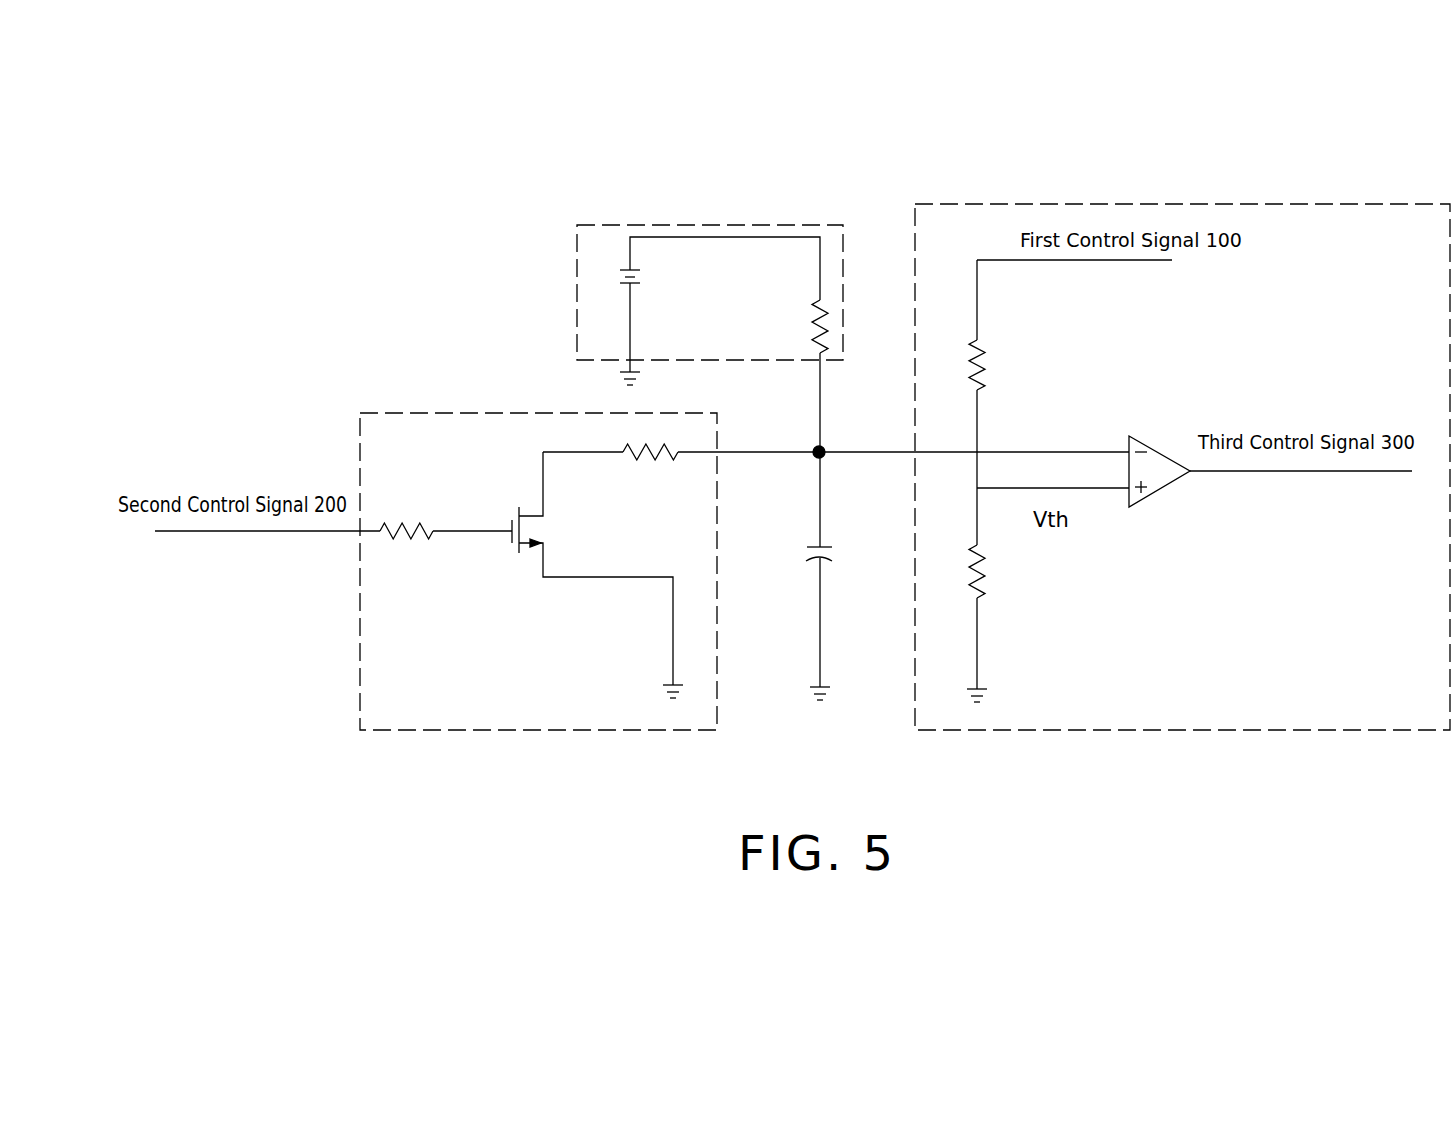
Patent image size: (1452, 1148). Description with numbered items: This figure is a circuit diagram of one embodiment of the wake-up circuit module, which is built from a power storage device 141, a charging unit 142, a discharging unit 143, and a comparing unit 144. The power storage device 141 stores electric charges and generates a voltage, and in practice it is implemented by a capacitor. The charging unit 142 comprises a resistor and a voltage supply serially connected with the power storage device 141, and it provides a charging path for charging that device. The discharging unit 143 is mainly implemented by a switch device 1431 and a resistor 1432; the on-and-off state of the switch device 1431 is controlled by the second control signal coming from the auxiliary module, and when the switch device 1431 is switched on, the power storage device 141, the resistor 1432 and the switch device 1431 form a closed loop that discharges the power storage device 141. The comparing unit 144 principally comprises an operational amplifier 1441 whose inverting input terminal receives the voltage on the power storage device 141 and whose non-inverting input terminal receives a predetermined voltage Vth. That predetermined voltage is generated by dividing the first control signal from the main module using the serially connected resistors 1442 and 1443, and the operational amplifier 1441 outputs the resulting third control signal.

The power storage device 141 is at (805, 548).
The charging unit 142 is at (645, 223).
The discharging unit 143 is at (490, 550).
The comparing unit 144 is at (1153, 448).
The switch device 1431 is at (513, 512).
The resistor 1432 is at (627, 448).
The operational amplifier 1441 is at (1153, 445).
The resistor 1442 is at (985, 350).
The resistor 1443 is at (983, 573).